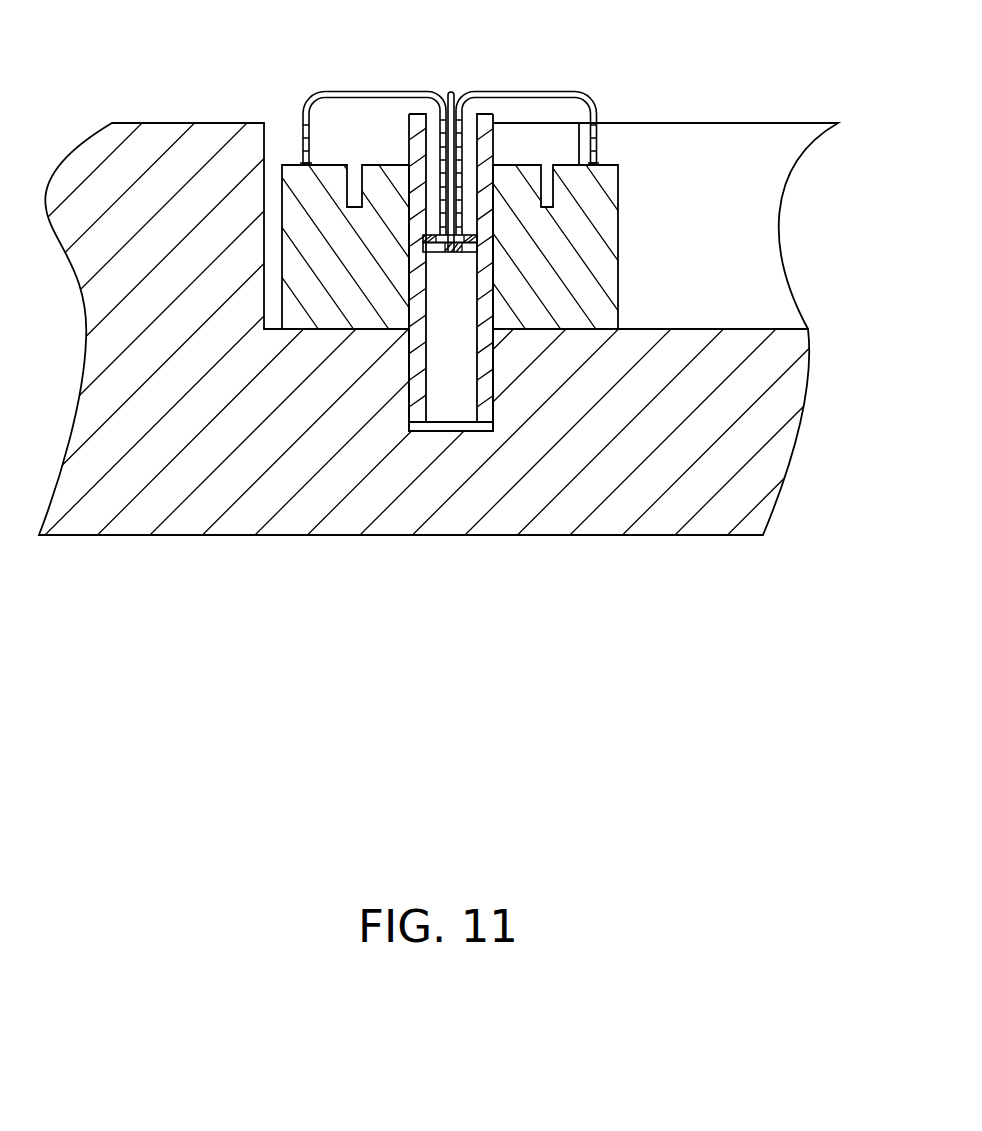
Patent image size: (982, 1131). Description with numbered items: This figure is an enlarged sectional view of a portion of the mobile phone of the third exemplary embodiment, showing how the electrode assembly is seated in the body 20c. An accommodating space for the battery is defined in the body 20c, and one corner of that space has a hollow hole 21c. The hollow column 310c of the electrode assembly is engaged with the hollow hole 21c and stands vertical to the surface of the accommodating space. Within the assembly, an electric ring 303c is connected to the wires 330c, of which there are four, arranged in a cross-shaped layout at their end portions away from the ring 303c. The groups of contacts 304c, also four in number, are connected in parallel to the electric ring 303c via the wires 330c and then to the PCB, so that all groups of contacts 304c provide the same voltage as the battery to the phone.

The body 20c is at (168, 145).
The groups of contacts 304c is at (595, 260).
The wires 330c is at (362, 92).
The electric ring 303c is at (461, 253).
The hollow hole 21c is at (457, 407).
The hollow column 310c is at (487, 382).